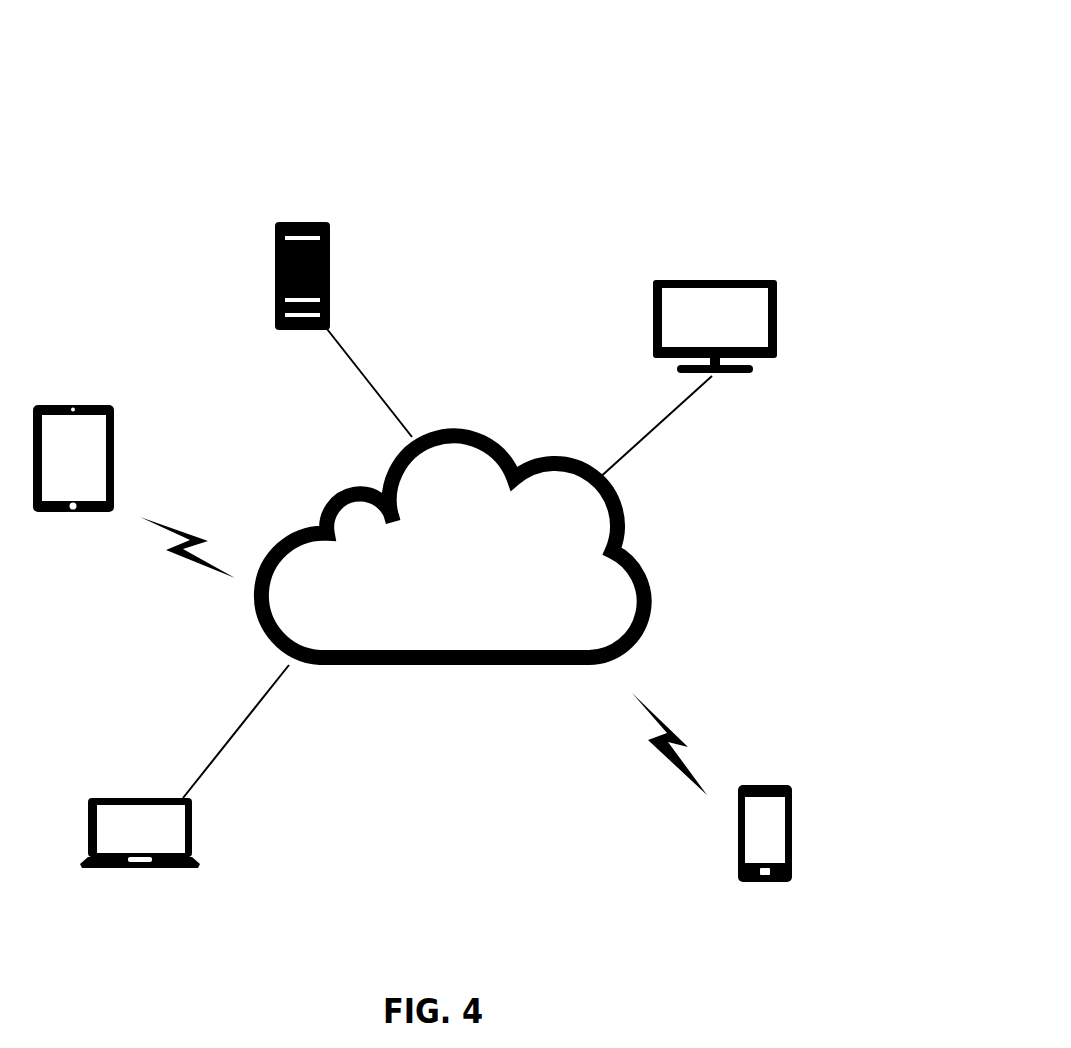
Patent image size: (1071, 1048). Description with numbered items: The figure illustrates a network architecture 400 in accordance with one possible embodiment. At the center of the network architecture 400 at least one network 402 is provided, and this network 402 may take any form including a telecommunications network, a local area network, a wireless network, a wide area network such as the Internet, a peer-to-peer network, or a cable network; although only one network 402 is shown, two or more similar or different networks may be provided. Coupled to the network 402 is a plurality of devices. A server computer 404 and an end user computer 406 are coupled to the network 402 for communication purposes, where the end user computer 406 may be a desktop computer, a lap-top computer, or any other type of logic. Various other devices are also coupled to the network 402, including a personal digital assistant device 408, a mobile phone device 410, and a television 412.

The network architecture 400 is at (78, 95).
The network 402 is at (462, 665).
The server computer 404 is at (302, 222).
The end user computer 406 is at (137, 798).
The personal digital assistant (PDA) device 408 is at (75, 405).
The mobile phone device 410 is at (757, 785).
The television 412 is at (720, 280).